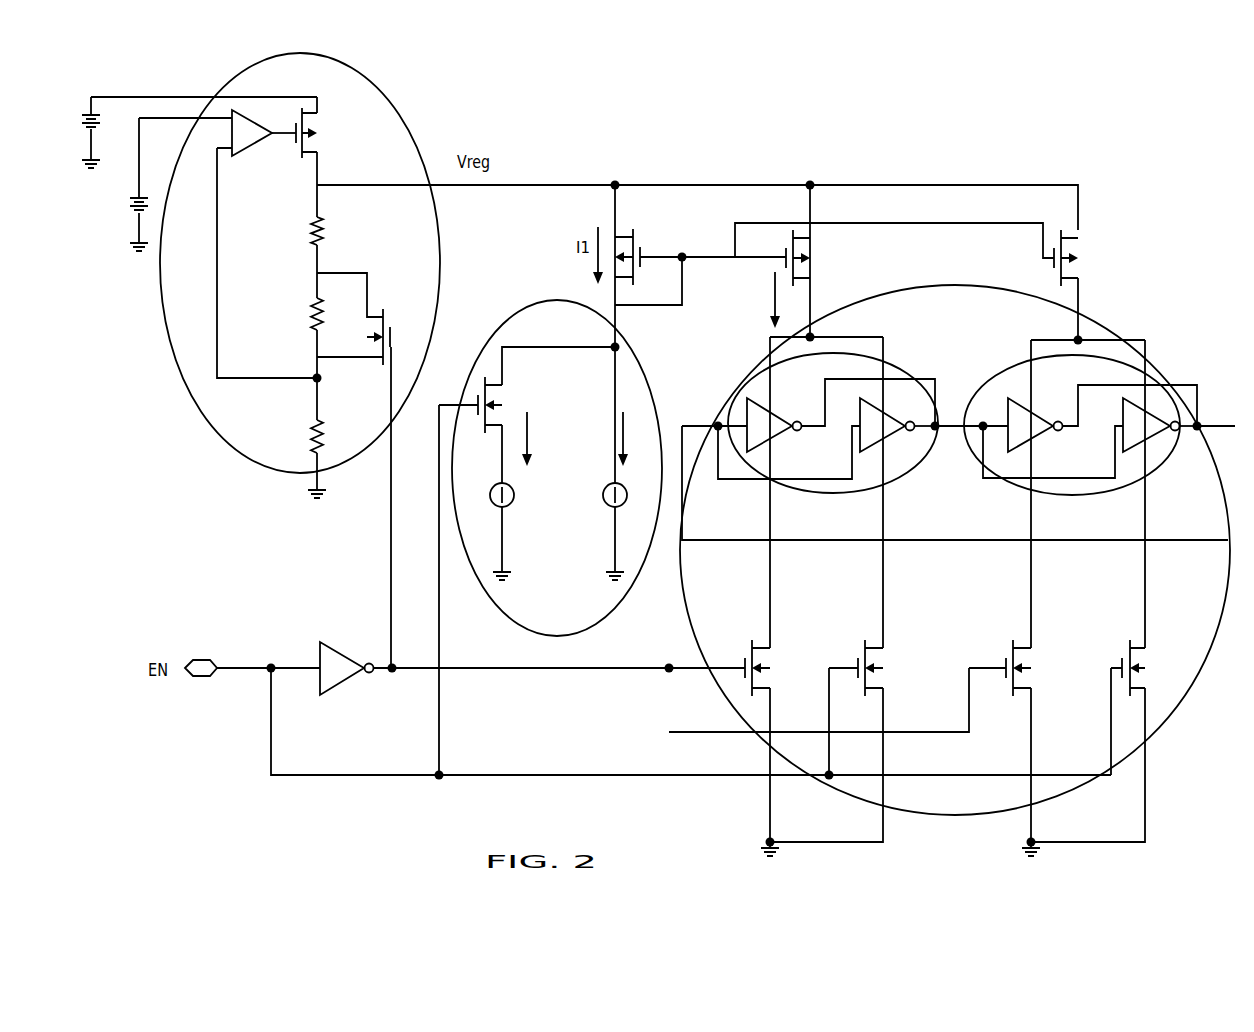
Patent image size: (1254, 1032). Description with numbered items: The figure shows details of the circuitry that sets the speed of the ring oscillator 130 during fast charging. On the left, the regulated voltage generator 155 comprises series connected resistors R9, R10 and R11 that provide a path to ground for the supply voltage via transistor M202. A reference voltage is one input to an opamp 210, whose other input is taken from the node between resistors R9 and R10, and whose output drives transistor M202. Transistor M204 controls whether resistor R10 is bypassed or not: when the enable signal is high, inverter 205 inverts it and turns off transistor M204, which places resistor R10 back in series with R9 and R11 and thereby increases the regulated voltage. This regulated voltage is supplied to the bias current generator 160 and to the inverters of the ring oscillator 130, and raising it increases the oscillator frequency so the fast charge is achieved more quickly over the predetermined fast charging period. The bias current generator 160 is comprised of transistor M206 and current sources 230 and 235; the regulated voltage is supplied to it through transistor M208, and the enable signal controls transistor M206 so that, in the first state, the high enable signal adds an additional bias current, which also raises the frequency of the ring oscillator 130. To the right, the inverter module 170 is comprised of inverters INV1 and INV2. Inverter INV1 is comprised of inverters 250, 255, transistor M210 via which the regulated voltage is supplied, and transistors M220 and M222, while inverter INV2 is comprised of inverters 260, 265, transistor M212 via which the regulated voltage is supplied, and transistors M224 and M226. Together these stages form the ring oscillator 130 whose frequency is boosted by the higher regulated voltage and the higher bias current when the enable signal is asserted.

The ring oscillator 130 is at (722, 116).
The regulated voltage generator 155 is at (550, 104).
The bias current generator 160 is at (518, 313).
The inverter module 170 is at (1002, 282).
The inverter 205 is at (342, 682).
The opamp 210 is at (250, 146).
The current source 230 is at (514, 495).
The current source 235 is at (603, 495).
The inverter 250 is at (786, 412).
The inverter 255 is at (856, 417).
The inverter 260 is at (1044, 412).
The inverter 265 is at (1118, 417).
The transistor M202 is at (334, 133).
The transistor M204 is at (369, 319).
The transistor M206 is at (496, 405).
The transistor M208 is at (651, 264).
The transistor M210 is at (824, 258).
The transistor M212 is at (1092, 258).
The transistor M220 is at (745, 668).
The transistor M222 is at (880, 707).
The transistor M224 is at (876, 686).
The transistor M226 is at (1152, 707).
The resistor R9 is at (304, 436).
The resistor R10 is at (301, 314).
The resistor R11 is at (301, 231).
The inverter INV1 is at (811, 439).
The inverter INV2 is at (1099, 440).